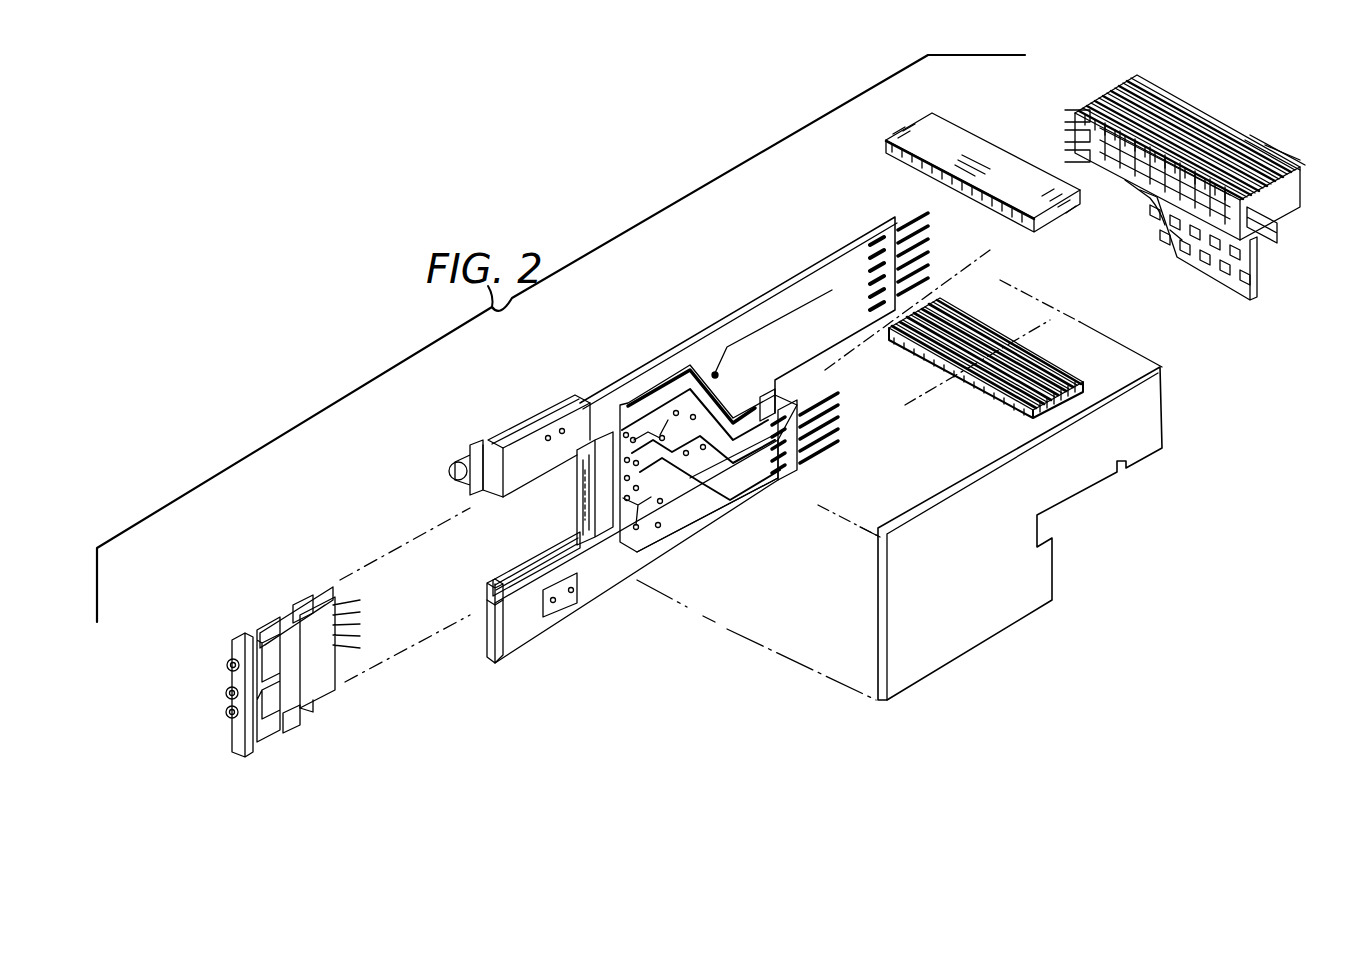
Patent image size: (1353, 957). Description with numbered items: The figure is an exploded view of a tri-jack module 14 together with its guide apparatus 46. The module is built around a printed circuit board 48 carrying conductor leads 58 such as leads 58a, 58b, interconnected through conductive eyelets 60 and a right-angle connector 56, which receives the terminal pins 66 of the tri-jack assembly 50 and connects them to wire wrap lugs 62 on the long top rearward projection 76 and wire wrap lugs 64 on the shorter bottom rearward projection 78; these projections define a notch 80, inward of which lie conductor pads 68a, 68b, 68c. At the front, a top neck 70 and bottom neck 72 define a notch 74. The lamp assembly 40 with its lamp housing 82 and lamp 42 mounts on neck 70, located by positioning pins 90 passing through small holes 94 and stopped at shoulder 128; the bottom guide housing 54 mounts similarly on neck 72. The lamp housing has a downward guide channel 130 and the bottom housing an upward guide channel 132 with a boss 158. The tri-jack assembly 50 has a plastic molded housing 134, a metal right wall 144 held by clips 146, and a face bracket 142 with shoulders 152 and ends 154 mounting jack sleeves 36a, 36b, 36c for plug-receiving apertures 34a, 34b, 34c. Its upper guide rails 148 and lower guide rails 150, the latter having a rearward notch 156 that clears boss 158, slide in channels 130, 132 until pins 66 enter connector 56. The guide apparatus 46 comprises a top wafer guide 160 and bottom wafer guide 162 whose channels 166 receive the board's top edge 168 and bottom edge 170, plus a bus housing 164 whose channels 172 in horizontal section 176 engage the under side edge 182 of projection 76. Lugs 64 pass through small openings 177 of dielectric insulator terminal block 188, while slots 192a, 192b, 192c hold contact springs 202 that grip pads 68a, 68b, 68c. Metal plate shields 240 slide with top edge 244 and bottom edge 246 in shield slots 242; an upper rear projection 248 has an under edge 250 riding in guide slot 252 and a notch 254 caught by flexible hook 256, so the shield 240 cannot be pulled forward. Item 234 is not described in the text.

The tri-jack module 14 is at (679, 302).
The lamp assembly 40 is at (530, 417).
The lamp 42 is at (455, 462).
The guide apparatus 46 is at (1140, 323).
The printed circuit board 48 is at (633, 580).
The tri-jack assembly 50 is at (275, 661).
The bottom guide housing 54 is at (534, 645).
The right-angle connector 56 is at (640, 407).
The conductor leads 58 is at (727, 495).
The conductor lead 58a is at (715, 373).
The conductor lead 58b is at (714, 410).
The conductive eyelets 60 is at (668, 438).
The wire wrap lugs 62 is at (932, 240).
The wire wrap lugs 64 is at (848, 415).
The terminal pins 66 is at (350, 620).
The conductor pad 68a is at (760, 400).
The conductor pad 68b is at (762, 405).
The conductor pad 68c is at (750, 435).
The top forwardly projecting neck 70 is at (560, 430).
The bottom forwardly projecting neck 72 is at (598, 580).
The notch 74 is at (552, 524).
The top rearward projection 76 is at (835, 258).
The bottom rearward projection 78 is at (782, 472).
The notch 80 is at (785, 390).
The lamp housing 82 is at (540, 430).
The positioning pins 90 is at (563, 434).
The small holes 94 is at (545, 450).
The shoulder 128 is at (570, 430).
The guide channel 130 is at (495, 495).
The guide channel 132 is at (510, 580).
The plastic molded housing 134 is at (258, 630).
The face bracket 142 is at (238, 728).
The right wall 144 is at (340, 665).
The clips 146 is at (310, 600).
The guide rails 148 is at (286, 612).
The guide rails 150 is at (300, 720).
The shoulders 152 is at (262, 730).
The ends 154 is at (250, 750).
The rearward notch 156 is at (330, 700).
The boss 158 is at (560, 543).
The top wafer guide 160 is at (935, 140).
The bottom wafer guide 162 is at (990, 400).
The bus housing 164 is at (1288, 188).
The channels 166 is at (1008, 350).
The top edge 168 is at (780, 285).
The bottom edge 170 is at (727, 503).
The channels 172 is at (1210, 125).
The horizontal section 176 is at (1280, 178).
The small openings 177 is at (1240, 283).
The under side edge 182 is at (855, 343).
The dielectric insulator terminal block 188 is at (1257, 265).
The slot 192a is at (1066, 112).
The slot 192b is at (1066, 134).
The slot 192c is at (1066, 155).
The contact springs 202 is at (1165, 225).
The housing end 234 is at (493, 660).
The metal plate shields 240 is at (1072, 575).
The shield slots 242 is at (1045, 365).
The top edge 244 is at (950, 500).
The bottom edge 246 is at (937, 678).
The upper rear projection 248 is at (1072, 487).
The under edge 250 is at (1140, 462).
The guide slot 252 is at (1247, 138).
The notch 254 is at (1122, 472).
The flexible hook 256 is at (1270, 143).
The jack sleeve 36a is at (230, 660).
The jack sleeve 36b is at (228, 690).
The jack sleeve 36c is at (228, 710).
The plug-receiving aperture 34a is at (230, 665).
The plug-receiving aperture 34b is at (228, 694).
The plug-receiving aperture 34c is at (225, 715).